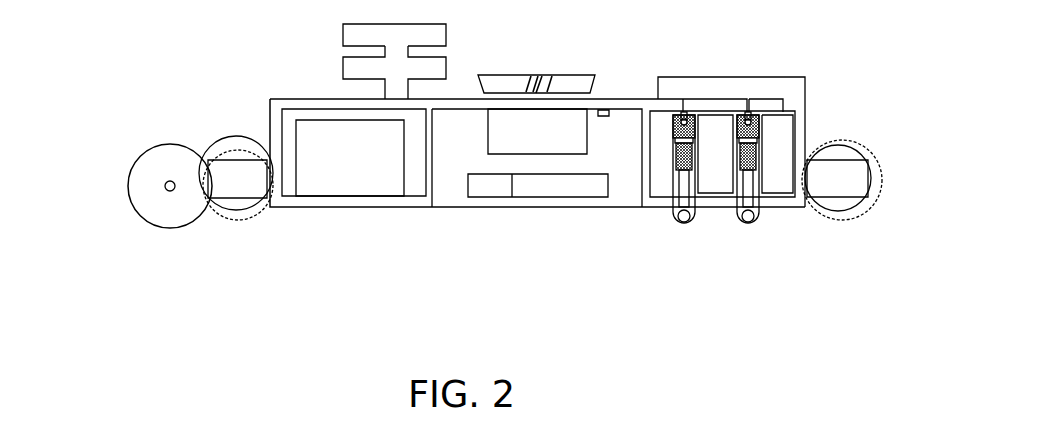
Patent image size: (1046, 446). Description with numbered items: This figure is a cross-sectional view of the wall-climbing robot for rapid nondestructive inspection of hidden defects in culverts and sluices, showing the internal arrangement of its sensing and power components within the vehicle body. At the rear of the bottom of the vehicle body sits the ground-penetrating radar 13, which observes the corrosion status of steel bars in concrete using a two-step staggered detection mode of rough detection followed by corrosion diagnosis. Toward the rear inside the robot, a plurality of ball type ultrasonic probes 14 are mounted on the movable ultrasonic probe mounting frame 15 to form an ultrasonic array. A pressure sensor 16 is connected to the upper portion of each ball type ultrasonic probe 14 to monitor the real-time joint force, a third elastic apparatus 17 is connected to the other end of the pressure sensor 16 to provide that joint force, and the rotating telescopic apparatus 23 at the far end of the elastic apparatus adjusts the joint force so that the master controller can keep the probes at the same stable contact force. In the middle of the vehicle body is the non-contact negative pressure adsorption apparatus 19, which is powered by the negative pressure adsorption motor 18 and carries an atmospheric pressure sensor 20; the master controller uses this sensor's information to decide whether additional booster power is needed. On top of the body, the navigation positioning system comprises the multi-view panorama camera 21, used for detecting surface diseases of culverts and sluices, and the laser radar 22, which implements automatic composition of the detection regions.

The ground-penetrating radar 13 is at (317, 145).
The ball type ultrasonic probe 14 is at (762, 192).
The movable ultrasonic probe mounting frame 15 is at (817, 225).
The pressure sensor 16 is at (757, 141).
The third elastic apparatus 17 is at (762, 125).
The negative pressure adsorption motor 18 is at (549, 137).
The negative pressure adsorption apparatus 19 is at (488, 189).
The atmospheric pressure sensor 20 is at (604, 116).
The multi-view panorama camera 21 is at (362, 67).
The laser radar 22 is at (362, 35).
The rotating telescopic apparatus 23 is at (780, 91).